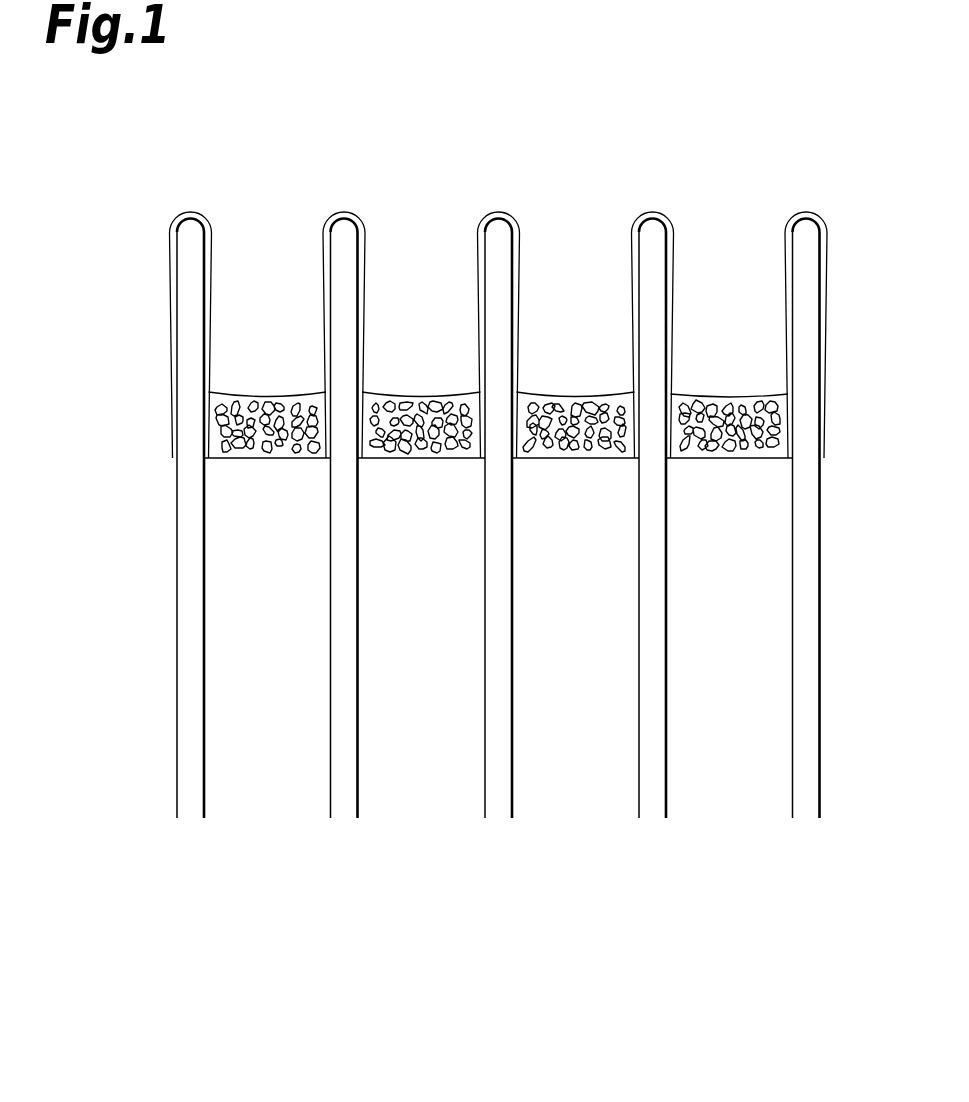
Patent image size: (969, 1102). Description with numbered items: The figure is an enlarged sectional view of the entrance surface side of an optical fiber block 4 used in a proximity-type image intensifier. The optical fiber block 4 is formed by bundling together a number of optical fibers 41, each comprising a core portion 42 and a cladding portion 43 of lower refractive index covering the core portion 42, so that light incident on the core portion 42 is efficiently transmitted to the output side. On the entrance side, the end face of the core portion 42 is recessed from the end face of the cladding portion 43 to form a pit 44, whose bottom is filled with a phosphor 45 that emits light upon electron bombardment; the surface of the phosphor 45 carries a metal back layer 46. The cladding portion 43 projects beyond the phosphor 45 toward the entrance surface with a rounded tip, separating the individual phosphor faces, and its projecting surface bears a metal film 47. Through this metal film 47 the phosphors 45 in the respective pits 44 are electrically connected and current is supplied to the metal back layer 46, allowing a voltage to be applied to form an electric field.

The optical fiber block 4 is at (140, 196).
The optical fiber 41 is at (735, 893).
The core portion 42 is at (719, 813).
The cladding portion 43 is at (654, 813).
The pit 44 is at (755, 461).
The phosphor 45 is at (783, 430).
The metal back layer 46 is at (757, 397).
The metal film 47 is at (829, 255).